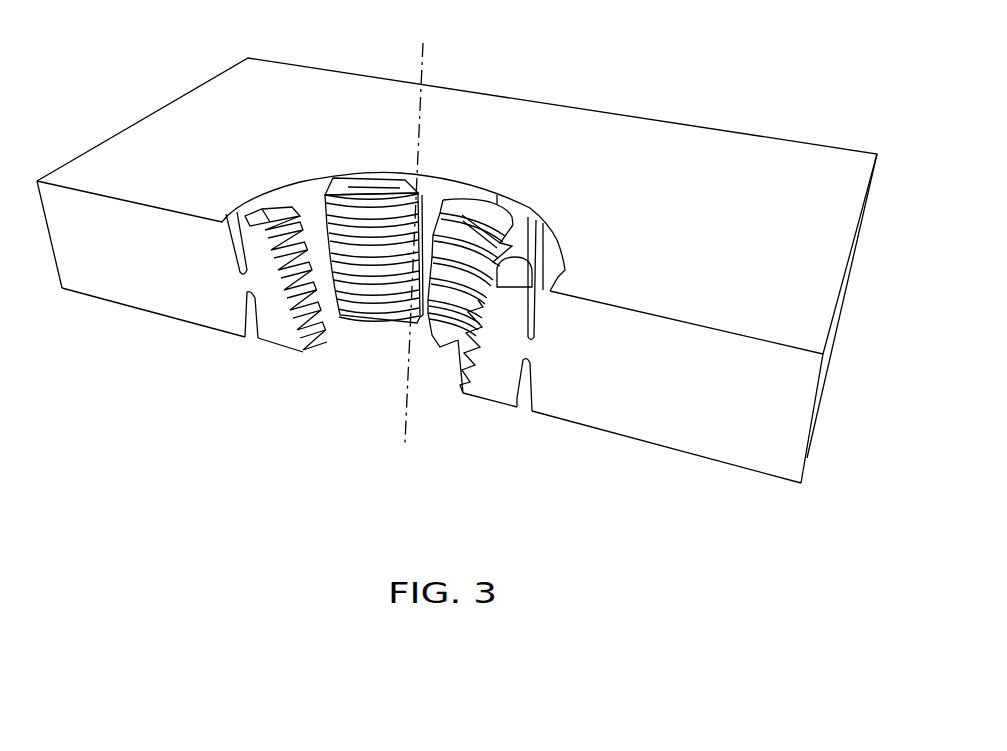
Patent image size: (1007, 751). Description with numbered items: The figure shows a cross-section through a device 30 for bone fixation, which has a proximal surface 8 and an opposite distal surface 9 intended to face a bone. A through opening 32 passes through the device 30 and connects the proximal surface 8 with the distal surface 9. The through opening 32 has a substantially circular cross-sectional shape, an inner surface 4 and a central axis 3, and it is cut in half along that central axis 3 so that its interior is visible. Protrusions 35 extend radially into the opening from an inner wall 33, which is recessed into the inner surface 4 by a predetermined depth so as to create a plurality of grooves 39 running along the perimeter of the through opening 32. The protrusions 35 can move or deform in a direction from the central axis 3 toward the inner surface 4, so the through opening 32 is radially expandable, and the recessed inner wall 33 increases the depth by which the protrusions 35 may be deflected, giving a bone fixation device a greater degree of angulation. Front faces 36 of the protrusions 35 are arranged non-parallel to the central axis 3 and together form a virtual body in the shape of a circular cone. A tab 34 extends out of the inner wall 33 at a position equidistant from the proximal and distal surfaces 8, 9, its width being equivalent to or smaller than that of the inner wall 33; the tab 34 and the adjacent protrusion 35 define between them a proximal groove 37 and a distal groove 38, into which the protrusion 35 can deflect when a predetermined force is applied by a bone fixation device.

The central axis 3 is at (423, 63).
The inner surface 4 is at (443, 192).
The proximal surface 8 is at (713, 145).
The distal surface 9 is at (699, 458).
The device 30 is at (170, 103).
The through opening 32 is at (308, 200).
The inner wall 33 is at (225, 218).
The tab 34 is at (245, 282).
The protrusions 35 is at (278, 320).
The front faces 36 is at (440, 320).
The proximal groove 37 is at (533, 318).
The distal groove 38 is at (525, 400).
The grooves 39 is at (370, 175).